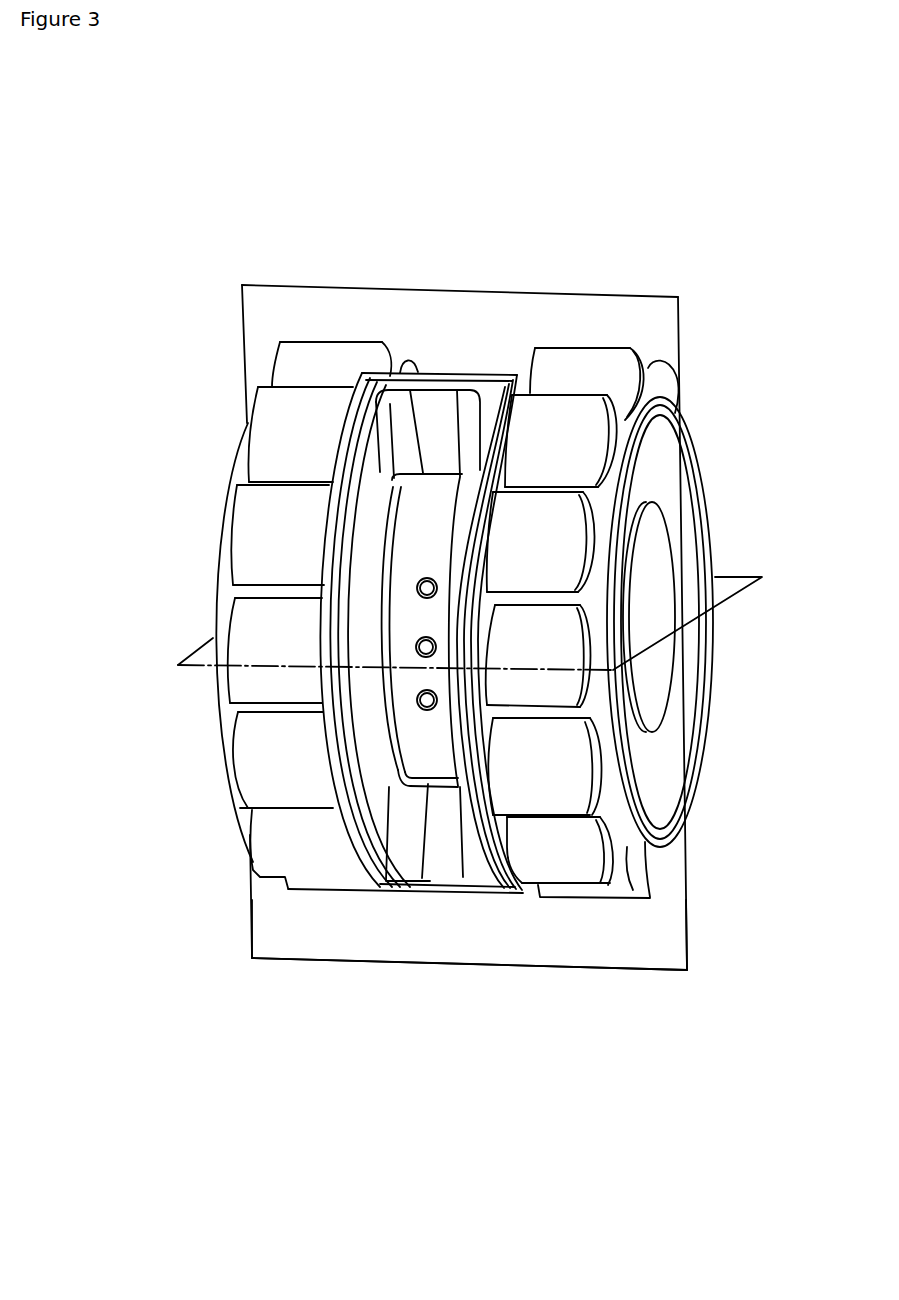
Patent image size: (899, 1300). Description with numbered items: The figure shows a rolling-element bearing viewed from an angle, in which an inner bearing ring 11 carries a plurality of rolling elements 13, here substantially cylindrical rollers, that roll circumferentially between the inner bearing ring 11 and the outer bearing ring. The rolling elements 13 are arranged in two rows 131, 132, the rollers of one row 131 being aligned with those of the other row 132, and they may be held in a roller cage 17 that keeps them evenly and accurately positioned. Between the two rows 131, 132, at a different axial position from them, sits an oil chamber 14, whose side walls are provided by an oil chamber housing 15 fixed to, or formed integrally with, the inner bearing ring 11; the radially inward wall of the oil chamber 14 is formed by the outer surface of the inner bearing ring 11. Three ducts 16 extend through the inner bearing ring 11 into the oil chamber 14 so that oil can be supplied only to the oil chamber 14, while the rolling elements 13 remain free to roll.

The inner bearing ring 11 is at (669, 516).
The rolling elements 13 is at (587, 368).
The row of rolling elements 131 is at (291, 915).
The row of rolling elements 132 is at (613, 915).
The oil chamber 14 is at (422, 753).
The oil chamber housing 15 is at (438, 422).
The duct 16 is at (425, 585).
The roller cage 17 is at (605, 761).